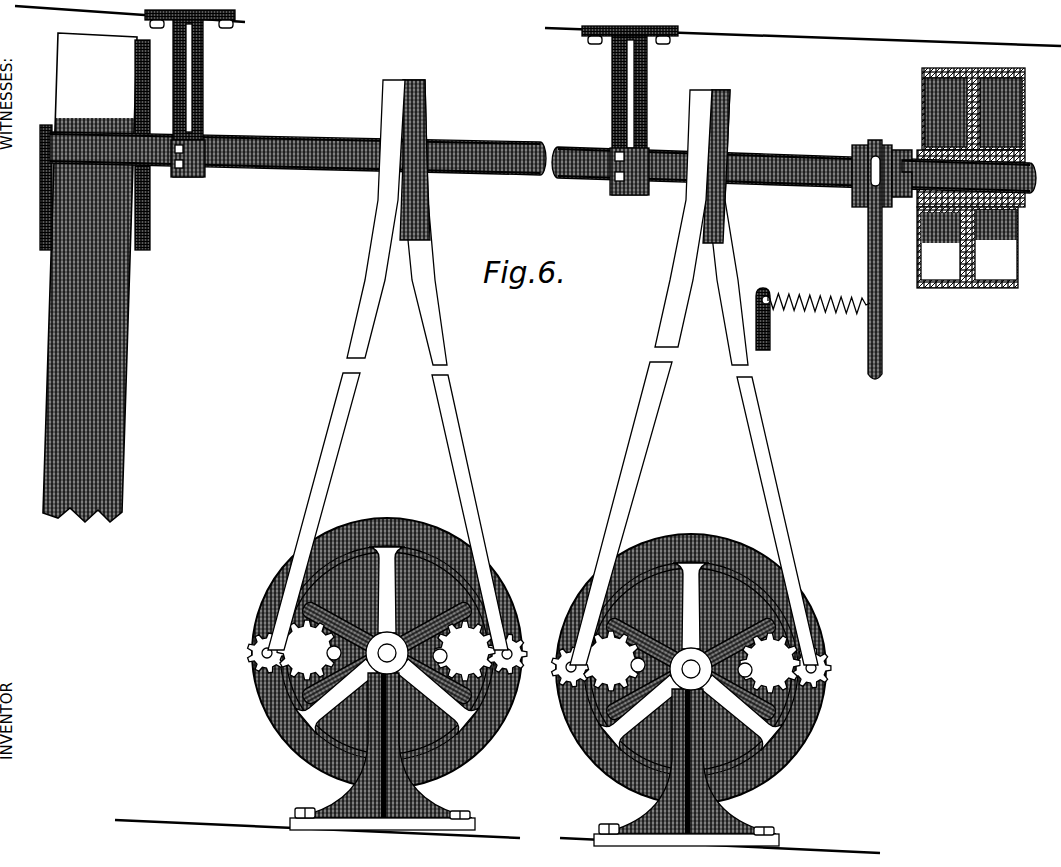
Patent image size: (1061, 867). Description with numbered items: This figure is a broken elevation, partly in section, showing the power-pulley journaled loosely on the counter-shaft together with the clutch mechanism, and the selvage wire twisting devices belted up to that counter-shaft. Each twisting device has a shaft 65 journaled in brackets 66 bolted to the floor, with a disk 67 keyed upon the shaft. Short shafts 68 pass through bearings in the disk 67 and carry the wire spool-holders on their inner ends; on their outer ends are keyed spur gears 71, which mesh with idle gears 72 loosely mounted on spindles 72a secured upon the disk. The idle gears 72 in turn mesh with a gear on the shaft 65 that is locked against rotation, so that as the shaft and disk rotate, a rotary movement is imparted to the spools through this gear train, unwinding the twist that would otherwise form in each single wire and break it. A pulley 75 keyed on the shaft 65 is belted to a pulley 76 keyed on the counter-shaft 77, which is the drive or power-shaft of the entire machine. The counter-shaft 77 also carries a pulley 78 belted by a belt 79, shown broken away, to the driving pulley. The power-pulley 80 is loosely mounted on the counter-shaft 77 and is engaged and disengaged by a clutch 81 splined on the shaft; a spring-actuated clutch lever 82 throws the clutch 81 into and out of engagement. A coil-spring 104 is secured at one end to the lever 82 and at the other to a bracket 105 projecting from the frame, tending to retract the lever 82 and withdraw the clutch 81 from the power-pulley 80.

The shaft 65 is at (389, 650).
The bracket 66 is at (402, 817).
The disk 67 is at (391, 524).
The short shaft 68 is at (275, 652).
The spur gear 71 is at (258, 646).
The idle gear 72 is at (318, 664).
The spindle 72a is at (335, 661).
The pulley 75 is at (410, 556).
The pulley 76 is at (418, 131).
The counter-shaft 77 is at (326, 146).
The pulley 78 is at (143, 221).
The belt 79 is at (64, 291).
The power-pulley 80 is at (1009, 258).
The clutch 81 is at (898, 148).
The clutch lever 82 is at (869, 241).
The coil-spring 104 is at (808, 296).
The bracket 105 is at (768, 344).